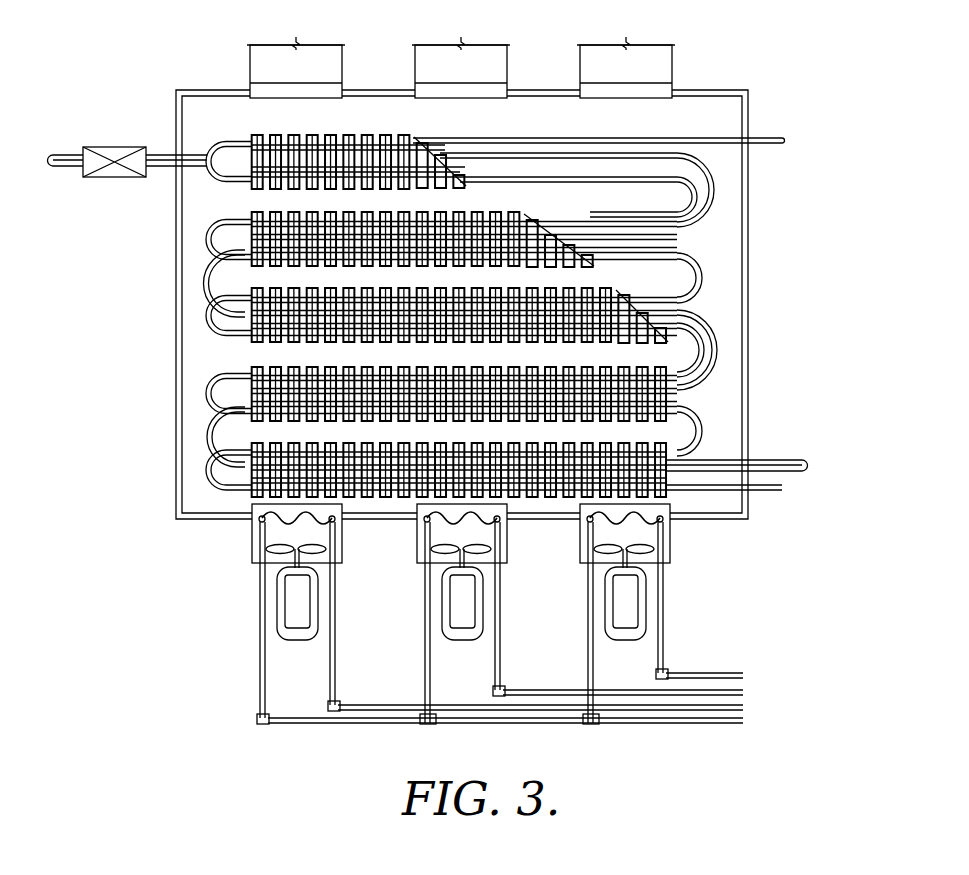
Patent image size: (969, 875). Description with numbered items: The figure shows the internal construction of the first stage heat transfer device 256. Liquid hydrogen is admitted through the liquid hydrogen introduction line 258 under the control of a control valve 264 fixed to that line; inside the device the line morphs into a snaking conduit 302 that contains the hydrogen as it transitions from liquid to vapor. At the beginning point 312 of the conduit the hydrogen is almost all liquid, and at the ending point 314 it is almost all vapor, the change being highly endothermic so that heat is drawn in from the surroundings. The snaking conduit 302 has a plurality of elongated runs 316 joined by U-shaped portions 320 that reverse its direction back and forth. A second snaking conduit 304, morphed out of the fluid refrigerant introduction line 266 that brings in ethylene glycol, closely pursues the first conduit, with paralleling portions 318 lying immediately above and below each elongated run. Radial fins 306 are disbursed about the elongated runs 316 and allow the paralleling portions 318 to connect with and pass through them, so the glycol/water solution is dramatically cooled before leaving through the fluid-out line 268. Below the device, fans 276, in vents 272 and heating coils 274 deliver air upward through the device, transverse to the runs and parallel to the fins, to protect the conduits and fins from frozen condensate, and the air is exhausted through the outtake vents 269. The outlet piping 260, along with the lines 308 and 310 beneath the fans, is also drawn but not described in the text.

The first stage heat transfer device 256 is at (750, 262).
The liquid hydrogen introduction line 258 is at (162, 153).
The outlet pipe 260 is at (784, 460).
The control valve 264 is at (117, 176).
The fluid refrigerant introduction line 266 is at (775, 138).
The fluid-out line 268 is at (770, 492).
The outtake vents 269 is at (580, 73).
The in vents 272 is at (344, 546).
The heating coils 274 is at (258, 522).
The fans 276 is at (440, 598).
The snaking conduit 302 is at (658, 149).
The second snaking conduit 304 is at (703, 282).
The fins 306 is at (327, 136).
The right pipe 308 is at (338, 662).
The left pipe 310 is at (265, 668).
The beginning point 312 is at (198, 150).
The ending point 314 is at (722, 457).
The elongated runs 316 is at (494, 146).
The paralleling portions 318 is at (565, 138).
The U-shaped portions 320 is at (722, 185).